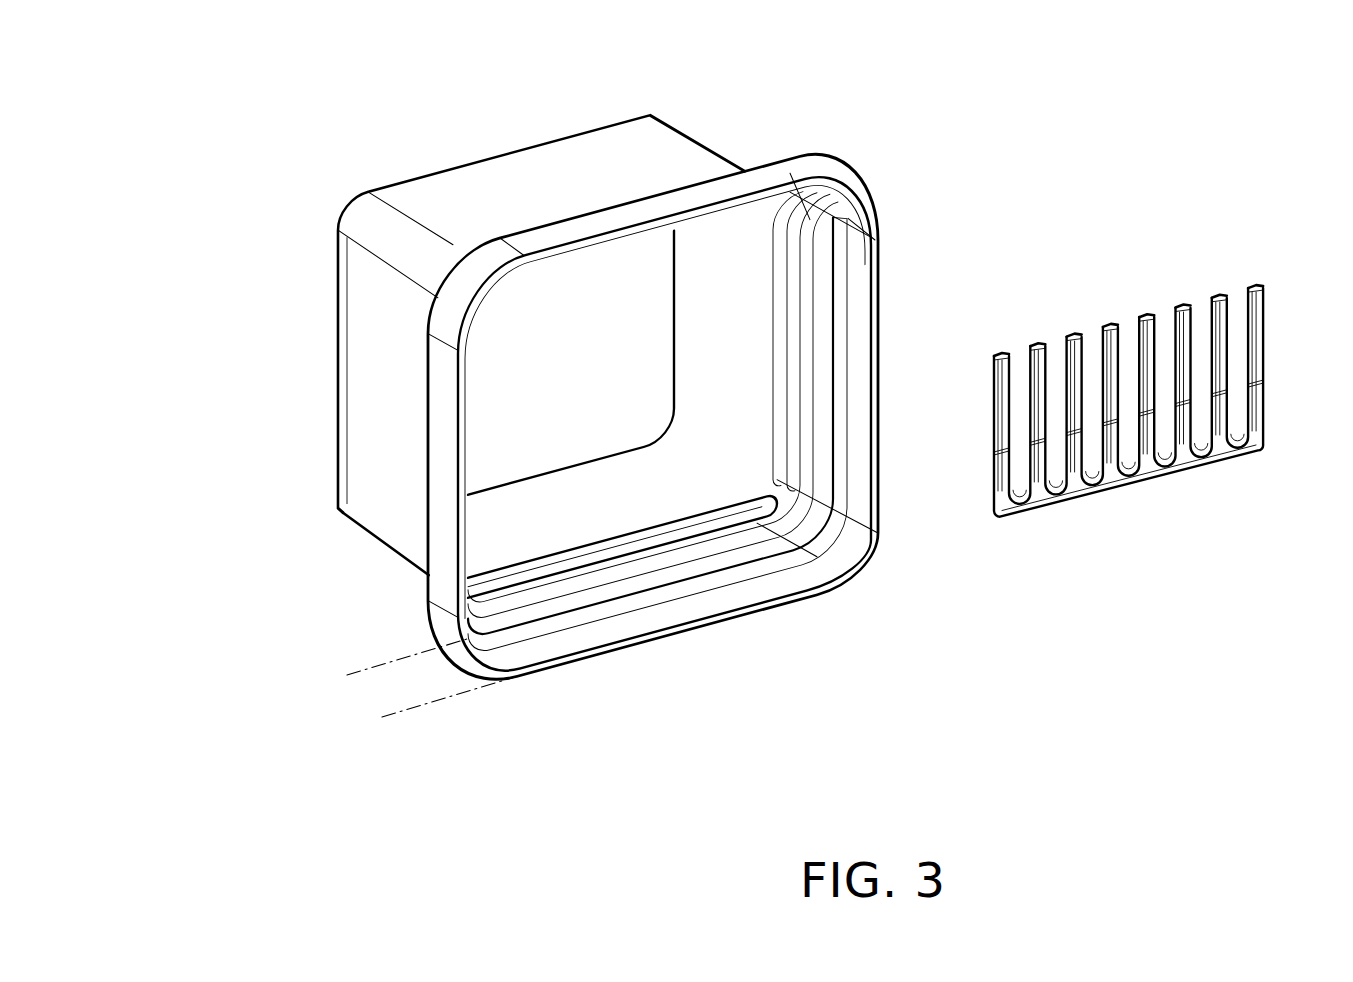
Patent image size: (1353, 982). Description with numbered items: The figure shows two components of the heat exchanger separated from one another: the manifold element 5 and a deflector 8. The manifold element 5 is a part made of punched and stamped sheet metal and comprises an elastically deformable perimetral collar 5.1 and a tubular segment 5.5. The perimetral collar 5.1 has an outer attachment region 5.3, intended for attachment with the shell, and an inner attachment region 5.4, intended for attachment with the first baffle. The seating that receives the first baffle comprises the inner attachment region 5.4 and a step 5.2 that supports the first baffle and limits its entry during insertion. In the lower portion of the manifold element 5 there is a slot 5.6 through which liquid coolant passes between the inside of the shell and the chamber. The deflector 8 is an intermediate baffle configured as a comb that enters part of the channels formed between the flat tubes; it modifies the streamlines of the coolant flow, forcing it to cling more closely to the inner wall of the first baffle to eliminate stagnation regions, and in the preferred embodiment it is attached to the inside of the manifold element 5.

The manifold element 5 is at (567, 98).
The perimetral collar 5.1 is at (382, 717).
The step 5.2 is at (670, 396).
The outer attachment region 5.3 is at (653, 417).
The inner attachment region 5.4 is at (672, 430).
The tubular segment 5.5 is at (541, 344).
The slot 5.6 is at (622, 546).
The deflector 8 is at (1195, 465).